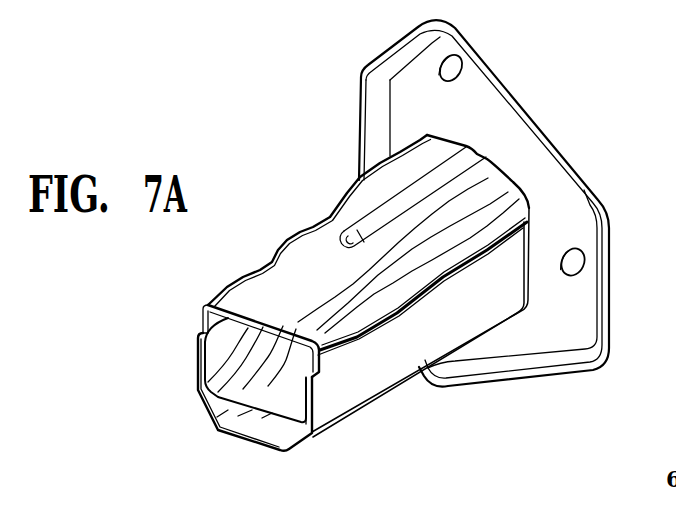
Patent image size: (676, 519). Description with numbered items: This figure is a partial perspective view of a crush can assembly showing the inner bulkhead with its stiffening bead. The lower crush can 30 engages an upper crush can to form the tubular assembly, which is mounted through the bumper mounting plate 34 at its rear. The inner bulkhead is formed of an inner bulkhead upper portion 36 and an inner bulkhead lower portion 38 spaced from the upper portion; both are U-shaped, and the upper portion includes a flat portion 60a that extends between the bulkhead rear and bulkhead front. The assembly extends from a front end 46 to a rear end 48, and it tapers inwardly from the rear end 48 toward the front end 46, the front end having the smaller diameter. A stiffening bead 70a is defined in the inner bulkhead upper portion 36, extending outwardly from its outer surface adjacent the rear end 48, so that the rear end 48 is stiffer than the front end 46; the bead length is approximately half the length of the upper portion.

The lower crush can 30 is at (364, 406).
The bumper mounting plate 34 is at (523, 103).
The inner bulkhead upper portion 36 is at (284, 242).
The inner bulkhead lower portion 38 is at (272, 415).
The front end 46 is at (200, 337).
The rear end 48 is at (503, 167).
The flat portion 60a is at (244, 288).
The stiffening bead 70a is at (390, 210).